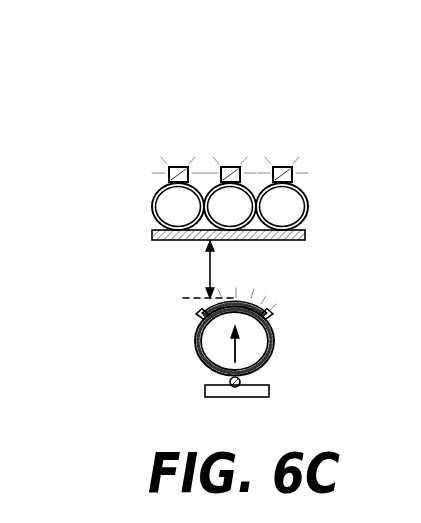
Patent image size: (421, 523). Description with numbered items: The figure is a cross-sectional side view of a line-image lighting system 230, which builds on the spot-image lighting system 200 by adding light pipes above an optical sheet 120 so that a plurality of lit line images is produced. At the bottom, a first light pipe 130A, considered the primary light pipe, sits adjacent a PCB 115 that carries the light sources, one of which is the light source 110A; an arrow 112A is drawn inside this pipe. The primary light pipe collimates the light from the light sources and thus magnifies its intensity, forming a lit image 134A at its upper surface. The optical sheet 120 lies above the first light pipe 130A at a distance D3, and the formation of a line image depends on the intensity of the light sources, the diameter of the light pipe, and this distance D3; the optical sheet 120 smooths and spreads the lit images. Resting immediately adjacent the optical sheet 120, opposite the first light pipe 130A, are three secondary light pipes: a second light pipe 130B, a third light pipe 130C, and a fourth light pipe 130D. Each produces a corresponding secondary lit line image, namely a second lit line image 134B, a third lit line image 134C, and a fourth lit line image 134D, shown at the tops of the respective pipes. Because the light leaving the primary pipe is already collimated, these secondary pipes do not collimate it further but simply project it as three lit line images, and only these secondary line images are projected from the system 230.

The line-image lighting system 230 is at (146, 122).
The spot-image lighting system 200 is at (132, 328).
The first light pipe 130A is at (273, 326).
The second light pipe 130B is at (152, 206).
The third light pipe 130C is at (247, 188).
The fourth light pipe 130D is at (308, 206).
The lit image 134A is at (240, 300).
The second lit line image 134B is at (177, 168).
The third lit line image 134C is at (230, 167).
The fourth lit line image 134D is at (291, 174).
The optical sheet 120 is at (305, 236).
The PCB 115 is at (269, 390).
The light source 110A is at (230, 380).
The rotation direction arrow 112A is at (238, 344).
The distance D3 is at (208, 269).